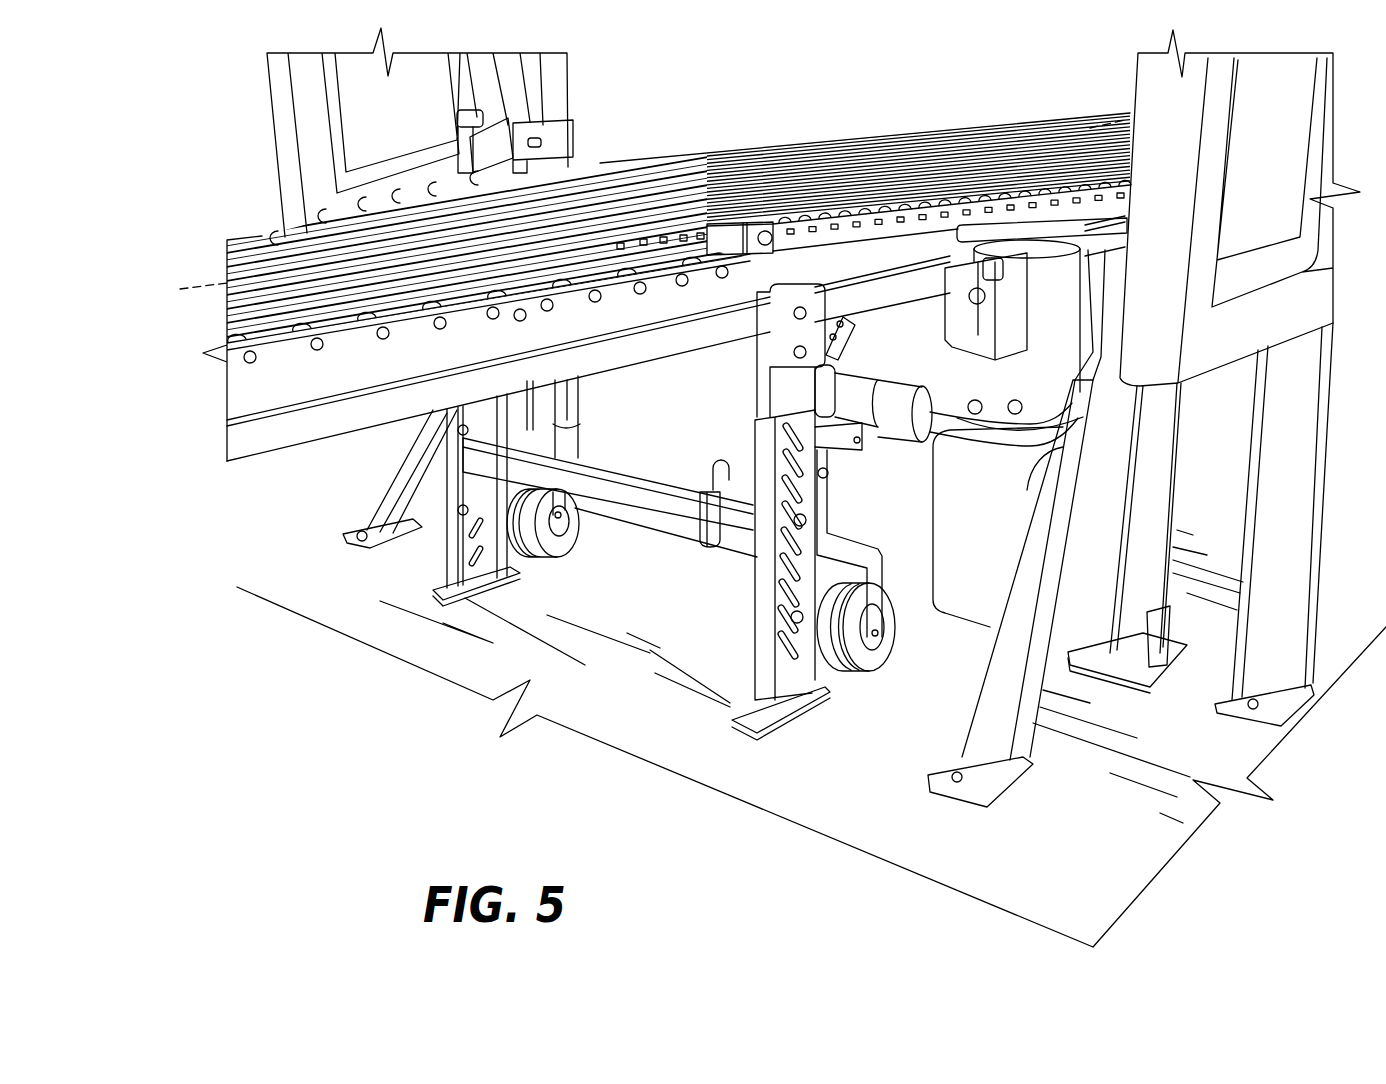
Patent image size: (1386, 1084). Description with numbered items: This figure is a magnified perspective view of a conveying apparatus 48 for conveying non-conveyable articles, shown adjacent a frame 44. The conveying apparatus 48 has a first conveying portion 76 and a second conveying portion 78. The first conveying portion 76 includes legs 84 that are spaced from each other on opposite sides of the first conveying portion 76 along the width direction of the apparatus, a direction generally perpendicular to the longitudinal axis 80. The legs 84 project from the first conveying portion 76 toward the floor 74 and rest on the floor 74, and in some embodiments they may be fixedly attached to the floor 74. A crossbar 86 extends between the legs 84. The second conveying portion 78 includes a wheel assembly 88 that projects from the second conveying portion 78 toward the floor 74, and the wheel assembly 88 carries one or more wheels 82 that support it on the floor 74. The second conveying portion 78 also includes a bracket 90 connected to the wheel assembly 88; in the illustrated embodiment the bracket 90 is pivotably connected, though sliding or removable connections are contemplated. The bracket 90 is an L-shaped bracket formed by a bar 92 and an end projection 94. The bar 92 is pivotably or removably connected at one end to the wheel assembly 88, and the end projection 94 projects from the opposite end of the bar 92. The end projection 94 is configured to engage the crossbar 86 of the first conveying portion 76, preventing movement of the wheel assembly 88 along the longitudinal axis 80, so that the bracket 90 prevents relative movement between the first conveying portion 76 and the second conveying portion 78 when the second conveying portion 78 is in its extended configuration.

The frame 44 is at (1286, 529).
The conveying apparatus 48 is at (653, 134).
The floor 74 is at (623, 717).
The first conveying portion 76 is at (800, 167).
The second conveying portion 78 is at (277, 237).
The longitudinal axis 80 is at (1120, 120).
The wheels 82 is at (545, 550).
The legs 84 is at (457, 540).
The crossbar 86 is at (632, 512).
The wheel assembly 88 is at (820, 532).
The bracket 90 is at (706, 455).
The bar 92 is at (848, 450).
The end projection 94 is at (710, 537).